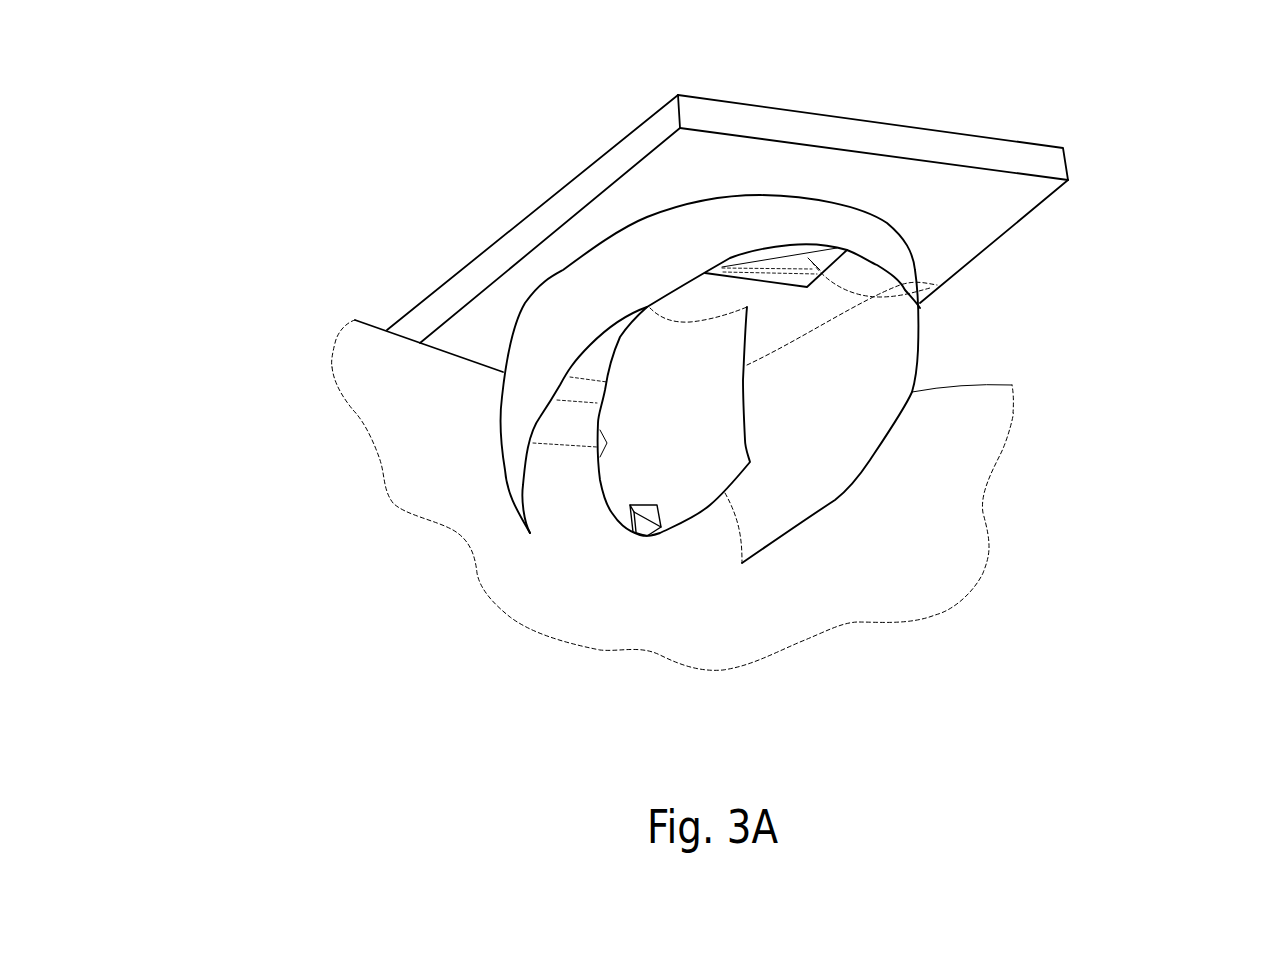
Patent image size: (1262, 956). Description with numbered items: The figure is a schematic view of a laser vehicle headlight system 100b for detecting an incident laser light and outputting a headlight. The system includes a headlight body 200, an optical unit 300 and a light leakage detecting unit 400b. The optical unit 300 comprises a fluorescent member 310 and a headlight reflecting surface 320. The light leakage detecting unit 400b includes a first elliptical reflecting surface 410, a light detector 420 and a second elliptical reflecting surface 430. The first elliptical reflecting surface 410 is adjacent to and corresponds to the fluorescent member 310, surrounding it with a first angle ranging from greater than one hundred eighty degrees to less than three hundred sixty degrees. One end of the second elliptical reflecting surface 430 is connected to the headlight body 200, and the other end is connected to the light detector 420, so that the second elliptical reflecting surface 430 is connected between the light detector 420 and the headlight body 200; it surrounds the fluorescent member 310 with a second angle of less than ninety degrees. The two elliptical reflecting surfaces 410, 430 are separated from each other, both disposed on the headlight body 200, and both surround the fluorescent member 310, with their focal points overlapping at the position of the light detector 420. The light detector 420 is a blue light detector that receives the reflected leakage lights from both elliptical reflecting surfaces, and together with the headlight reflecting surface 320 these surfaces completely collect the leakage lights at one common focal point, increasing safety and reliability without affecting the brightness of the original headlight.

The laser vehicle headlight system 100b is at (296, 72).
The headlight body 200 is at (617, 162).
The optical unit 300 is at (1153, 257).
The fluorescent member 310 is at (937, 285).
The headlight reflecting surface 320 is at (967, 423).
The light leakage detecting unit 400b is at (338, 628).
The first elliptical reflecting surface 410 is at (512, 410).
The light detector 420 is at (640, 537).
The second elliptical reflecting surface 430 is at (533, 443).